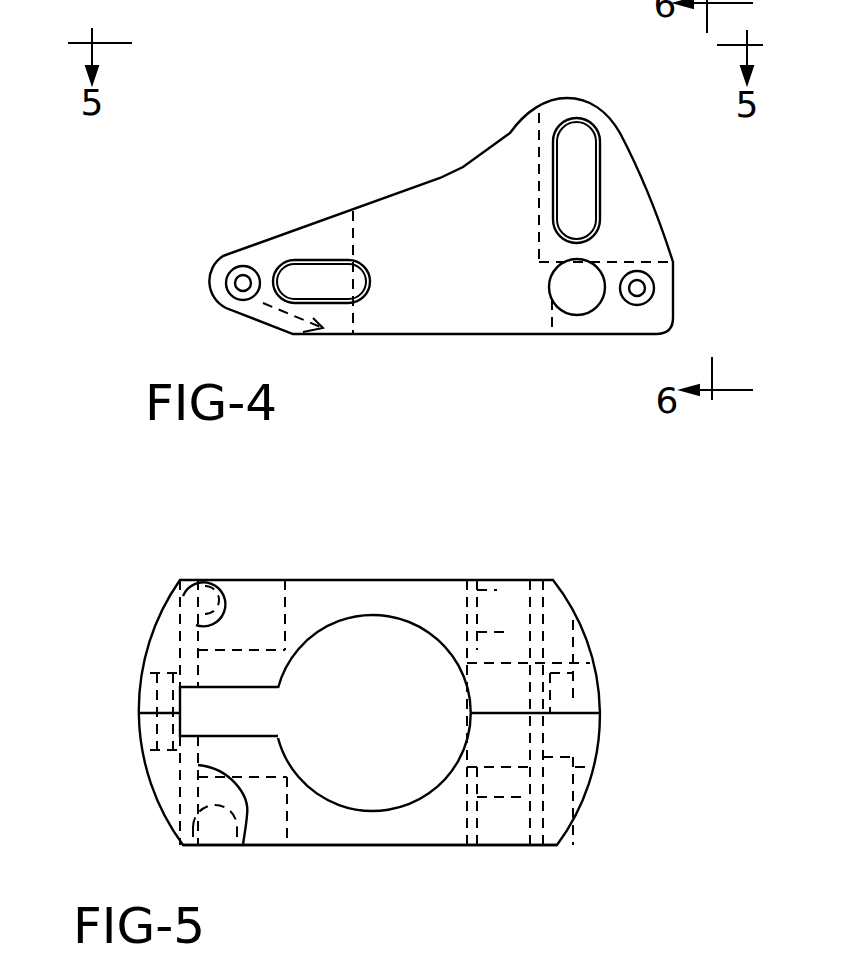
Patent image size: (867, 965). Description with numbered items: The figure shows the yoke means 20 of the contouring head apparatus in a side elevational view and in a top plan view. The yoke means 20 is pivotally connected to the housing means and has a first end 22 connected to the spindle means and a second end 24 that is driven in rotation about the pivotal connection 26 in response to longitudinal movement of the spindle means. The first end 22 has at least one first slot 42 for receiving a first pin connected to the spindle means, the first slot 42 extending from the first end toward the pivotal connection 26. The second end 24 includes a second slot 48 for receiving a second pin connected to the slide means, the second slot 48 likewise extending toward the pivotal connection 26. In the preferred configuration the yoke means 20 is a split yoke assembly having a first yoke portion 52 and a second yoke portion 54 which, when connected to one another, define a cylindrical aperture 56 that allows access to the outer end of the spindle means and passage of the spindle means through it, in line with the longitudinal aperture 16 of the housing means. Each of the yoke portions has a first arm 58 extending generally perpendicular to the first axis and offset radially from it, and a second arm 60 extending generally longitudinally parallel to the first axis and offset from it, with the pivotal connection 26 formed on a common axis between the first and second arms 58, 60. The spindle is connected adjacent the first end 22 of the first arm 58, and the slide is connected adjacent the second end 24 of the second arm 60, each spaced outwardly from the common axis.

In FIG. 4, the longitudinal aperture 16 is at (537, 153).
In FIG. 5, the longitudinal aperture 16 is at (317, 630).
In FIG. 4, the yoke means 20 is at (388, 188).
In FIG. 5, the yoke means 20 is at (618, 692).
In FIG. 4, the first end 22 is at (227, 260).
In FIG. 4, the second end 24 is at (604, 106).
In FIG. 4, the pivotal connection 26 is at (590, 298).
In FIG. 5, the pivotal connection 26 is at (467, 618).
In FIG. 4, the first slot 42 is at (307, 272).
In FIG. 5, the first slot 42 is at (200, 578).
In FIG. 4, the second slot 48 is at (588, 146).
In FIG. 5, the second slot 48 is at (483, 637).
In FIG. 5, the first yoke portion 52 is at (333, 517).
In FIG. 5, the second yoke portion 54 is at (364, 847).
In FIG. 5, the cylindrical aperture 56 is at (382, 810).
In FIG. 4, the first arm 58 is at (233, 308).
In FIG. 5, the first arm 58 is at (153, 627).
In FIG. 4, the second arm 60 is at (600, 65).